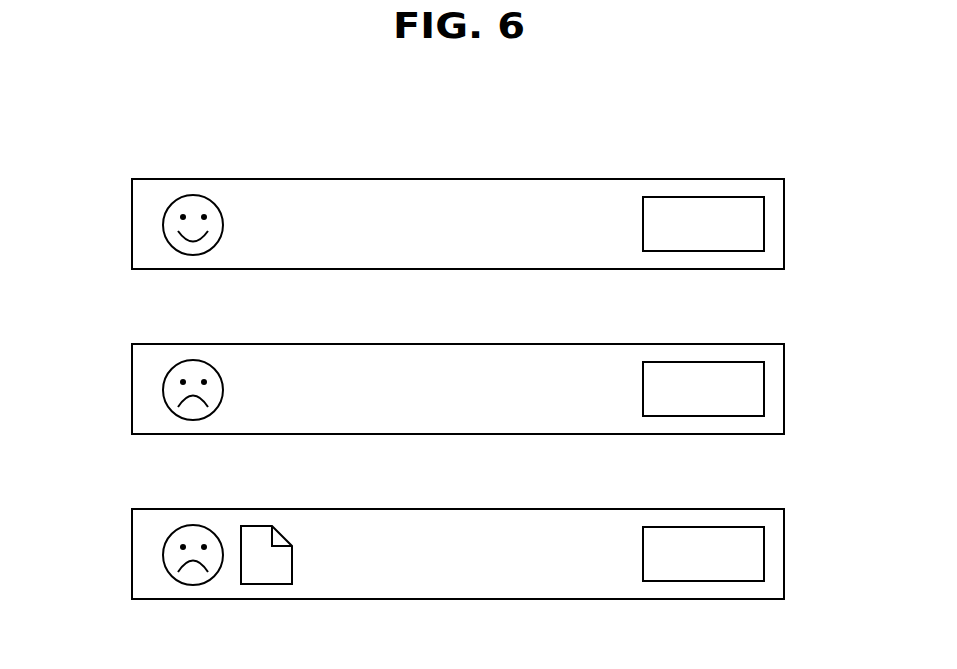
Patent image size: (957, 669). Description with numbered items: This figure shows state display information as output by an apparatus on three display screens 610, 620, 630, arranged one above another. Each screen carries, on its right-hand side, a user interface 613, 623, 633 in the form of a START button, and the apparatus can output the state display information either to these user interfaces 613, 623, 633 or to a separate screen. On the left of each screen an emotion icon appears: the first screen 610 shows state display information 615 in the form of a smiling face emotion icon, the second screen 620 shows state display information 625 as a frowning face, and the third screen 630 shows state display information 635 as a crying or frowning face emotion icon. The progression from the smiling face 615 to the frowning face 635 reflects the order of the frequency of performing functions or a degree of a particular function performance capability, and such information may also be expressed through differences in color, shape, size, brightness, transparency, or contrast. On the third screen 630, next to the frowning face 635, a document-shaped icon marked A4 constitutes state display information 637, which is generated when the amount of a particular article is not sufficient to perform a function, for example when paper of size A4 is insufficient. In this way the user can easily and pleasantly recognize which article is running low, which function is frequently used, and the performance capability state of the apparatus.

The screen 610 is at (132, 224).
The user interface 613 is at (764, 225).
The state display information 615 is at (193, 195).
The screen 620 is at (132, 389).
The user interface 623 is at (764, 390).
The state display information 625 is at (193, 360).
The screen 630 is at (132, 554).
The user interface 633 is at (764, 555).
The state display information 635 is at (193, 525).
The state display information 637 is at (265, 526).